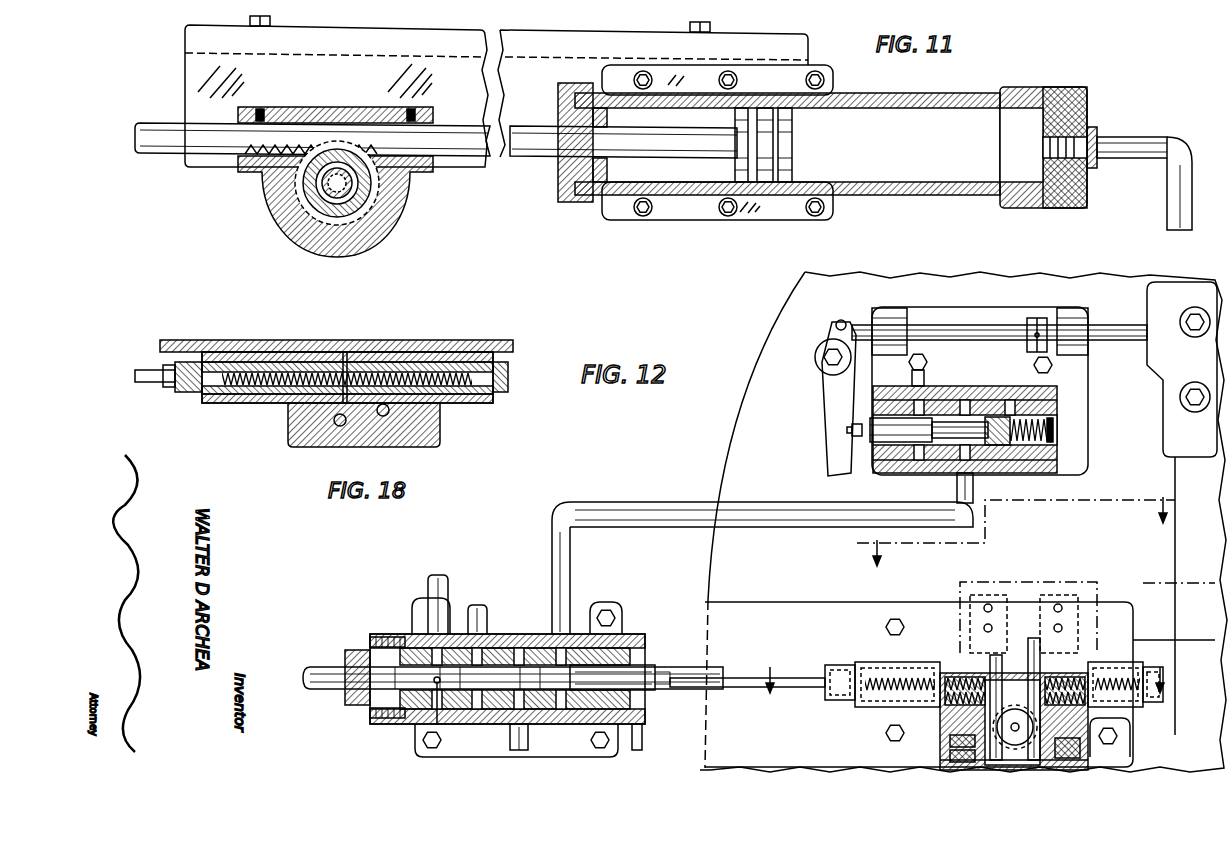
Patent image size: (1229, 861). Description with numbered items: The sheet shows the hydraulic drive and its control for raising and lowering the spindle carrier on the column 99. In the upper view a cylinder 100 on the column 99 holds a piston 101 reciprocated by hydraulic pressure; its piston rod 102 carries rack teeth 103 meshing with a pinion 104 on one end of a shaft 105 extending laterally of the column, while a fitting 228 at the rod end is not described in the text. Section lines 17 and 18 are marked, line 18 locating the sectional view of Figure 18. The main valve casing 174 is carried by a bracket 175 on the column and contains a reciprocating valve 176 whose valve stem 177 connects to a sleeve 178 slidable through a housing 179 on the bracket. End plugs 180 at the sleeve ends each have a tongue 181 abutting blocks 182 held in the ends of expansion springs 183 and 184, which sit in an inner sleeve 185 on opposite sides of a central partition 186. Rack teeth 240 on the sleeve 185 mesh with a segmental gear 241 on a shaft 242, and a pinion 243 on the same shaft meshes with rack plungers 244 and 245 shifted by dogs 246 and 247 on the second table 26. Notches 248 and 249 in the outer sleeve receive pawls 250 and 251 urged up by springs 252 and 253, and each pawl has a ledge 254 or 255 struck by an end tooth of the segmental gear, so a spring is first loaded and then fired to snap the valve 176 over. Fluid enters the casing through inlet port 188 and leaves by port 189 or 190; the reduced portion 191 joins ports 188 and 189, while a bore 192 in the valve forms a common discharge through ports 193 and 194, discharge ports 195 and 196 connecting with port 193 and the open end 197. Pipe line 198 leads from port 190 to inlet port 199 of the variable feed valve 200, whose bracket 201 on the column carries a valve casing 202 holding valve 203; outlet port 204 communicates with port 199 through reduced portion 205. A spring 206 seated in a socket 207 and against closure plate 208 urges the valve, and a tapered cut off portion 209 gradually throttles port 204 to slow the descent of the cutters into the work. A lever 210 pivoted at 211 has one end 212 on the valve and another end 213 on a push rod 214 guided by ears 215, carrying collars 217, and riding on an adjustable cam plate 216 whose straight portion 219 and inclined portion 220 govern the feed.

In FIG. 11, the upright or column 99 is at (200, 70).
In FIG. 12, the upright or column 99 is at (712, 540).
In FIG. 11, the cylinder 100 is at (966, 95).
In FIG. 11, the piston 101 is at (793, 142).
In FIG. 11, the piston rod 102 is at (692, 160).
In FIG. 11, the rack teeth 103 is at (268, 167).
In FIG. 11, the gear or pinion 104 is at (324, 248).
In FIG. 11, the shaft 105 is at (356, 212).
In FIG. 11, the pipe connection 228 is at (1178, 140).
In FIG. 18, the bracket 175 is at (218, 341).
In FIG. 12, the bracket 175 is at (640, 600).
In FIG. 18, the valve stem 177 is at (150, 366).
In FIG. 12, the valve stem 177 is at (806, 681).
In FIG. 18, the sleeve 178 is at (505, 366).
In FIG. 18, the housing 179 is at (436, 428).
In FIG. 18, the end plugs 180 is at (489, 388).
In FIG. 18, the tongue 181 is at (498, 352).
In FIG. 18, the blocks 182 is at (216, 398).
In FIG. 18, the expansion spring 183 is at (300, 348).
In FIG. 12, the expansion spring 183 is at (886, 663).
In FIG. 18, the expansion spring 184 is at (413, 340).
In FIG. 12, the expansion spring 184 is at (1115, 663).
In FIG. 18, the sleeve 185 is at (463, 405).
In FIG. 18, the partition 186 is at (331, 352).
In FIG. 18, the rack plunger 244 is at (320, 446).
In FIG. 12, the rack plunger 244 is at (990, 662).
In FIG. 18, the rack plunger 245 is at (376, 446).
In FIG. 12, the rack plunger 245 is at (1040, 656).
In FIG. 12, the section line 17 is at (1016, 527).
In FIG. 12, the section line 18 is at (963, 668).
In FIG. 12, the base or second table 26 is at (1030, 593).
In FIG. 12, the main valve casing 174 is at (410, 726).
In FIG. 12, the reciprocating valve 176 is at (632, 698).
In FIG. 12, the inlet port 188 is at (528, 726).
In FIG. 12, the outlet port 189 is at (500, 656).
In FIG. 12, the outlet port 190 is at (604, 603).
In FIG. 12, the reduced portion 191 is at (552, 616).
In FIG. 12, the bore 192 is at (396, 696).
In FIG. 12, the port 193 is at (437, 726).
In FIG. 12, the port 194 is at (562, 757).
In FIG. 12, the discharge port 195 is at (476, 600).
In FIG. 12, the discharge port 196 is at (370, 642).
In FIG. 12, the open end 197 is at (366, 681).
In FIG. 12, the pipe line 198 is at (791, 527).
In FIG. 12, the inlet port 199 is at (974, 481).
In FIG. 12, the variable feed valve 200 is at (1058, 446).
In FIG. 12, the bracket 201 is at (1080, 388).
In FIG. 12, the valve casing 202 is at (893, 478).
In FIG. 12, the valve 203 is at (880, 446).
In FIG. 12, the outlet port 204 is at (923, 382).
In FIG. 12, the reduced portion 205 is at (966, 414).
In FIG. 12, the spring 206 is at (1030, 427).
In FIG. 12, the socket 207 is at (1004, 476).
In FIG. 12, the closure plate 208 is at (1060, 466).
In FIG. 12, the tapered cut off portion 209 is at (956, 483).
In FIG. 12, the lever 210 is at (831, 410).
In FIG. 12, the pivot 211 is at (815, 378).
In FIG. 12, the end of lever 212 is at (845, 431).
In FIG. 12, the other end of lever 213 is at (853, 326).
In FIG. 12, the push rod 214 is at (1005, 322).
In FIG. 12, the ears 215 is at (908, 321).
In FIG. 12, the adjustable cam plate 216 is at (1185, 285).
In FIG. 12, the collars 217 is at (1043, 318).
In FIG. 12, the straight portion 219 is at (1145, 335).
In FIG. 12, the inclined portion 220 is at (1148, 362).
In FIG. 12, the rack teeth 240 is at (955, 706).
In FIG. 12, the segmental gear 241 is at (960, 720).
In FIG. 12, the rotatable shaft 242 is at (1028, 647).
In FIG. 12, the pinion 243 is at (990, 666).
In FIG. 12, the dog 246 is at (1005, 593).
In FIG. 12, the dog 247 is at (1065, 596).
In FIG. 12, the notch 248 is at (900, 706).
In FIG. 12, the notch 249 is at (1110, 706).
In FIG. 12, the pawl 250 is at (950, 741).
In FIG. 12, the pawl 251 is at (1118, 730).
In FIG. 12, the expansion spring 252 is at (950, 757).
In FIG. 12, the expansion spring 253 is at (1115, 762).
In FIG. 12, the ledge 254 is at (960, 673).
In FIG. 12, the ledge 255 is at (1070, 742).